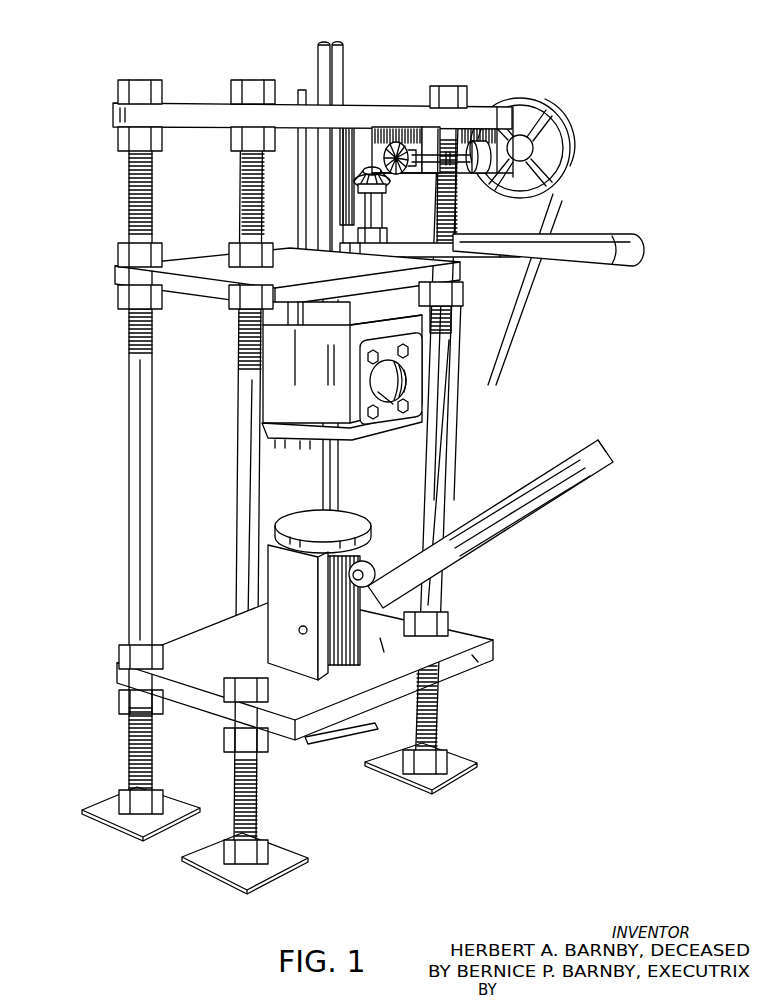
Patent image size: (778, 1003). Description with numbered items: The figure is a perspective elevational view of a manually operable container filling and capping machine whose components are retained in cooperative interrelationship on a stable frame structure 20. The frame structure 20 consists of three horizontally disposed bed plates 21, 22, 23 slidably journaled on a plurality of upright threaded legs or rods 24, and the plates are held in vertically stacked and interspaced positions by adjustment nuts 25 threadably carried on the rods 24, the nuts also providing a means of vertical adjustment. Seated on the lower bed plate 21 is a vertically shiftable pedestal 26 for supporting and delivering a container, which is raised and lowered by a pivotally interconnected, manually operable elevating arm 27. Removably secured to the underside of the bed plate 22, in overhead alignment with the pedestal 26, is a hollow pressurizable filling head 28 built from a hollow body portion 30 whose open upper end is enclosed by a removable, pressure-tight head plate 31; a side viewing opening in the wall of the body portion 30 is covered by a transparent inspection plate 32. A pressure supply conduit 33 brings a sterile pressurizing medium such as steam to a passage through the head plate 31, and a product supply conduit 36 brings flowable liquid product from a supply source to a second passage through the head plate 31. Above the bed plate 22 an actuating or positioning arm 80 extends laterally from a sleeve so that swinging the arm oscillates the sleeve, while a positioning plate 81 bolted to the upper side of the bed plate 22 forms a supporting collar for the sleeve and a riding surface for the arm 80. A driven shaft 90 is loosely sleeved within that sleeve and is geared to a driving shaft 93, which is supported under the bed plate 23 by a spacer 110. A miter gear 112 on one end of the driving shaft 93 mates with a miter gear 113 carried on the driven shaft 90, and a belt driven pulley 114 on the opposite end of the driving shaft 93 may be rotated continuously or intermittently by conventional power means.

The frame structure 20 is at (348, 460).
The lower bed plate 21 is at (408, 671).
The bed plate 22 is at (220, 277).
The bed plate 23 is at (432, 138).
The threaded legs or rods 24 is at (150, 470).
The adjustment nuts 25 is at (118, 120).
The pedestal 26 is at (332, 533).
The elevating arm 27 is at (473, 537).
The filling head 28 is at (324, 416).
The body portion 30 is at (418, 340).
The head plate 31 is at (450, 318).
The inspection plate 32 is at (380, 396).
The pressure supply conduit 33 is at (302, 92).
The product supply conduit 36 is at (338, 62).
The actuating or positioning arm 80 is at (580, 238).
The positioning plate 81 is at (408, 270).
The driven shaft 90 is at (388, 240).
The driving shaft 93 is at (474, 174).
The spacer 110 is at (380, 204).
The miter gear 112 is at (392, 142).
The mating miter gear 113 is at (388, 186).
The belt driven pulley 114 is at (552, 138).